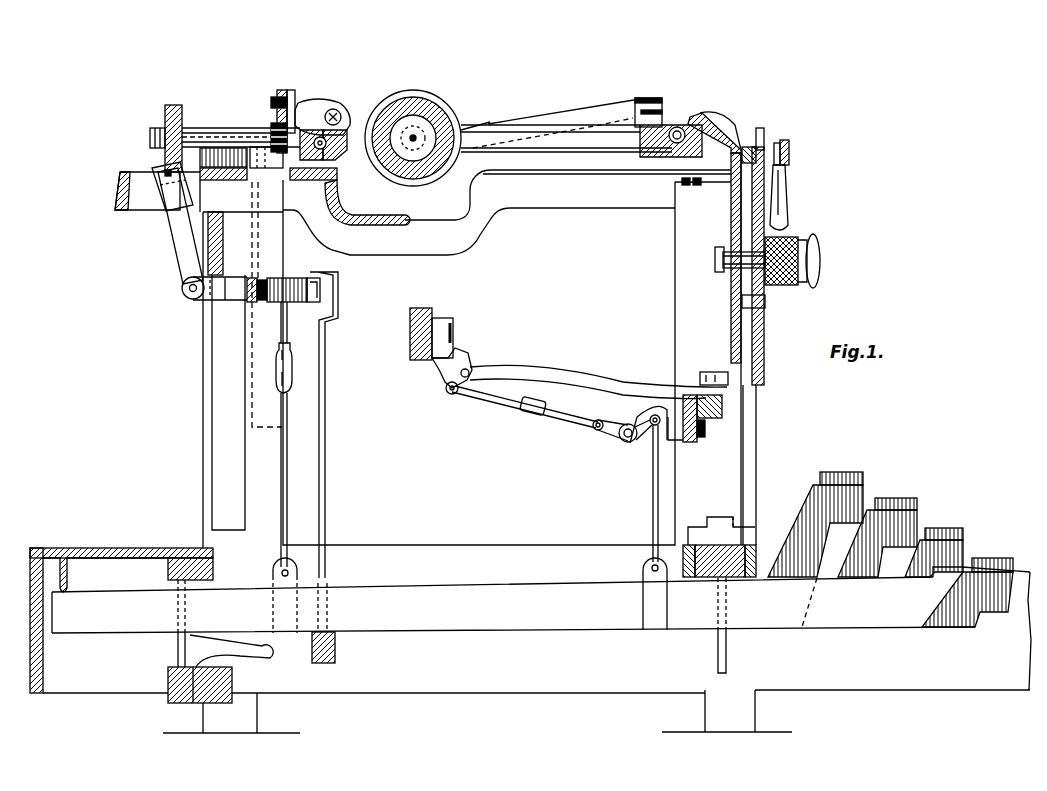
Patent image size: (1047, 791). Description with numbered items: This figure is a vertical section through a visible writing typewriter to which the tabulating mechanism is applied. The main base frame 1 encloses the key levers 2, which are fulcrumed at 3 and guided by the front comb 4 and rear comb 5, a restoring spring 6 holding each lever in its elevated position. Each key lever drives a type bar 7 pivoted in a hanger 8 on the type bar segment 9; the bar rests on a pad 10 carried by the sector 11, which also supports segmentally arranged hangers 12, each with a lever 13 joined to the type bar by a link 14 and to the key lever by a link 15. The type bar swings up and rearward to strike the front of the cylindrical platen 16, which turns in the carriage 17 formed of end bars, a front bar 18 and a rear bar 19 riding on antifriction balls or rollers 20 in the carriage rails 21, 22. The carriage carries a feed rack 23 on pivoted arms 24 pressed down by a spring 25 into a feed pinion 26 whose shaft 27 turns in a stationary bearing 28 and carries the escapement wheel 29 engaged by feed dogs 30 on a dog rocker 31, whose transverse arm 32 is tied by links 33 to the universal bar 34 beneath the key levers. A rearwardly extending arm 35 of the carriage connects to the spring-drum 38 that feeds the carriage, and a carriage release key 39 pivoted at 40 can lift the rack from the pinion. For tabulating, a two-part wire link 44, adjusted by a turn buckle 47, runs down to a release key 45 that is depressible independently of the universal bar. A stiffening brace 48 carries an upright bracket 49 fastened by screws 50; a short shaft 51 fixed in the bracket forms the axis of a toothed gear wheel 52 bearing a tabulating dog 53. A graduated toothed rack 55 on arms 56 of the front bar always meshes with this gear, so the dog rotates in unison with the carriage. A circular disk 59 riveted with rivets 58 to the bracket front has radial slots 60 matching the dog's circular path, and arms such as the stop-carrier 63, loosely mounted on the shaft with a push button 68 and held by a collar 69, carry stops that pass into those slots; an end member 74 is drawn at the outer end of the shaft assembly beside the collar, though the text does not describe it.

The main base frame 1 is at (530, 640).
The key levers 2 is at (892, 503).
The fulcrum 3 is at (68, 576).
The front comb 4 is at (726, 648).
The rear comb 5 is at (177, 647).
The restoring spring 6 is at (272, 655).
The type bar 7 is at (608, 392).
The hanger 8 is at (462, 365).
The type bar segment 9 is at (422, 308).
The pad 10 is at (724, 385).
The sector 11 is at (702, 440).
The hangers 12 is at (640, 441).
The lever 13 is at (606, 430).
The link 14 is at (496, 400).
The link 15 is at (652, 500).
The platen 16 is at (430, 104).
The carriage 17 is at (545, 117).
The front bar 18 is at (660, 147).
The rear bar 19 is at (330, 150).
The antifriction balls or rollers 20 is at (678, 126).
The carriage rail 21 is at (712, 122).
The carriage rail 22 is at (318, 180).
The feed rack 23 is at (279, 97).
The pivoted arms 24 is at (298, 97).
The spring 25 is at (322, 104).
The feed pinion 26 is at (270, 128).
The shaft 27 is at (212, 128).
The stationary bearing 28 is at (225, 128).
The escapement wheel 29 is at (175, 108).
The feed dogs 30 is at (163, 170).
The dog rocker 31 is at (180, 235).
The transverse arm 32 is at (300, 278).
The links 33 is at (326, 430).
The universal bar 34 is at (336, 646).
The rearwardly extending arm 35 is at (275, 105).
The spring-drum 38 is at (267, 304).
The carriage release key 39 is at (606, 110).
The pivot 40 is at (470, 126).
The wire connection or link 44 is at (281, 483).
The release key 45 is at (840, 474).
The turn buckle 47 is at (291, 370).
The stiffening brace 48 is at (756, 546).
The upright bracket 49 is at (762, 412).
The screws 50 is at (718, 517).
The short shaft 51 is at (719, 268).
The toothed disk or gear wheel 52 is at (731, 205).
The tabulating stop or dog 53 is at (759, 128).
The toothed rack 55 is at (745, 146).
The arms 56 is at (696, 114).
The rivets 58 is at (765, 306).
The circular disk 59 is at (765, 352).
The radial slots 60 is at (777, 143).
The arm or stop-carrier 63 is at (788, 215).
The key finger piece or push button 68 is at (790, 152).
The sector or collar 69 is at (782, 285).
The knob 74 is at (818, 245).